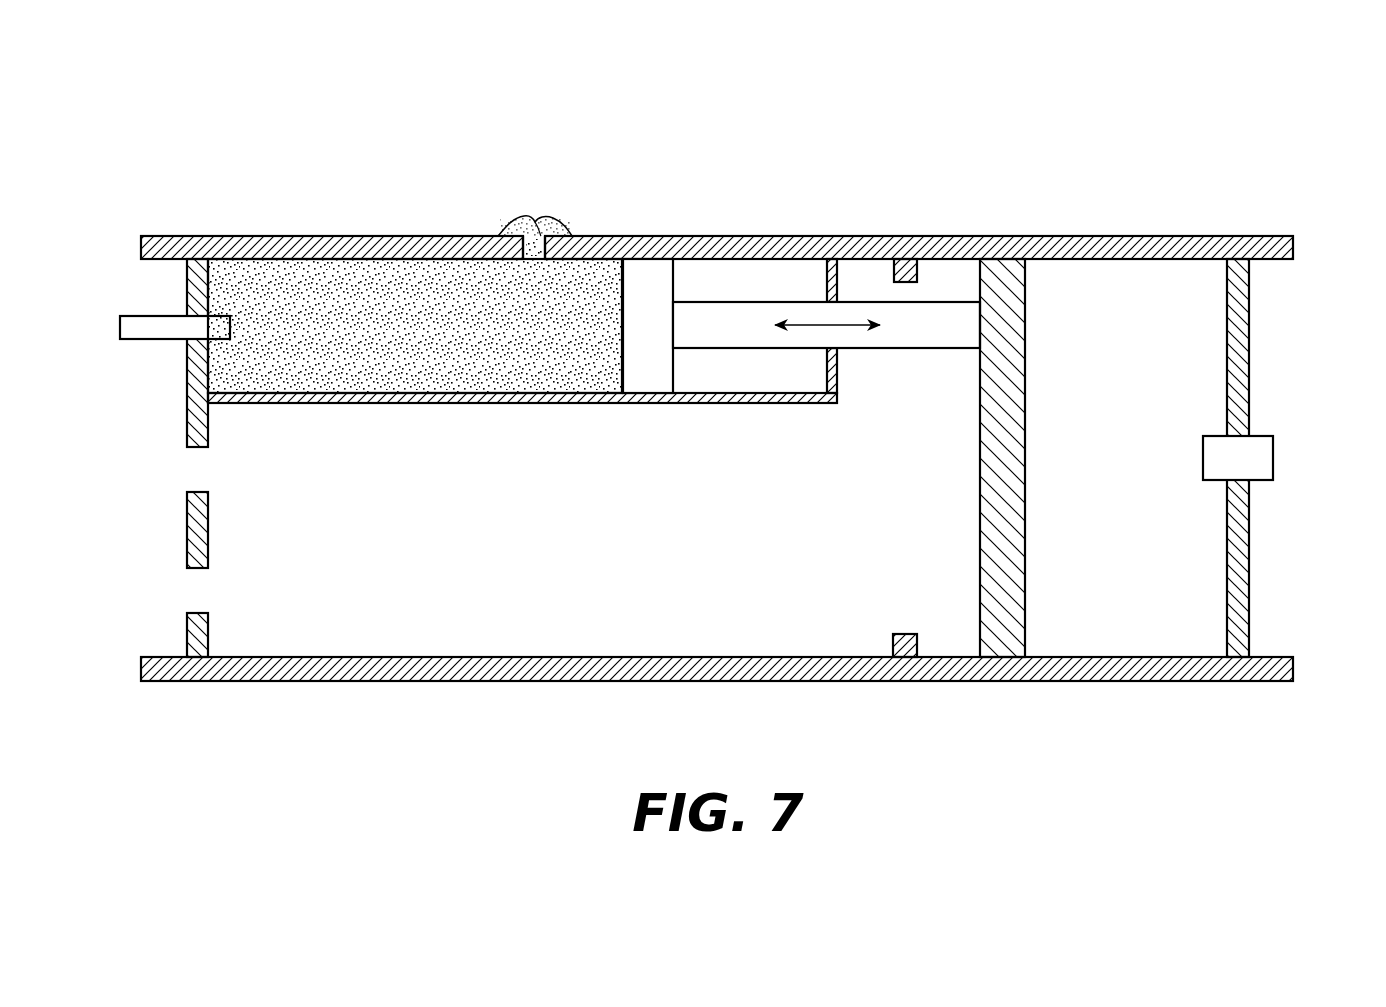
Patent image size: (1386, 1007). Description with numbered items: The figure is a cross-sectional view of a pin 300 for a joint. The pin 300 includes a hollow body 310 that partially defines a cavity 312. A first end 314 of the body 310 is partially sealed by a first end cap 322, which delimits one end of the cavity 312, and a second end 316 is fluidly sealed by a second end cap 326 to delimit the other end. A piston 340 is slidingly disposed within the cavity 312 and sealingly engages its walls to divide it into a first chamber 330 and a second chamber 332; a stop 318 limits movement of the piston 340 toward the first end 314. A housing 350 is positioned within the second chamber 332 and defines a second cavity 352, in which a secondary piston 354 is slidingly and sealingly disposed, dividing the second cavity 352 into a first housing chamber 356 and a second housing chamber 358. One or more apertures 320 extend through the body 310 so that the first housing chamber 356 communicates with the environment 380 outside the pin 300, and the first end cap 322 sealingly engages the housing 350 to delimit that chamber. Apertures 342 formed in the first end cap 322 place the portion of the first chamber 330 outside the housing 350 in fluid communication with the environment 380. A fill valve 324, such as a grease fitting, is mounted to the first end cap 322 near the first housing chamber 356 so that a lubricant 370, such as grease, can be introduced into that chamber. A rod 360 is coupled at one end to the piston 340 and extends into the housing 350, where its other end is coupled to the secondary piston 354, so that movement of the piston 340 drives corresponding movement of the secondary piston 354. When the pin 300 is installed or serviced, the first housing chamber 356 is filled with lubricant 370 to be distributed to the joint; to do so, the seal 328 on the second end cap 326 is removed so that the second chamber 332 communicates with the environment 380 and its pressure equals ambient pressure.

The pin 300 is at (1186, 164).
The hollow body 310 is at (743, 236).
The cavity 312 is at (1105, 760).
The first end 314 is at (158, 623).
The second end 316 is at (1275, 623).
The stop 318 is at (917, 640).
The apertures 320 is at (540, 236).
The first end cap 322 is at (187, 523).
The fill valve 324 is at (120, 327).
The second end cap 326 is at (1249, 548).
The seal 328 is at (1270, 455).
The first chamber 330 is at (866, 628).
The second chamber 332 is at (1119, 640).
The piston 340 is at (1028, 309).
The apertures 342 is at (198, 448).
The housing 350 is at (318, 403).
The second cavity 352 is at (330, 290).
The secondary piston 354 is at (650, 374).
The first housing chamber 356 is at (582, 296).
The second housing chamber 358 is at (710, 286).
The rod 360 is at (955, 306).
The lubricant 370 is at (232, 287).
The environment 380 is at (65, 102).